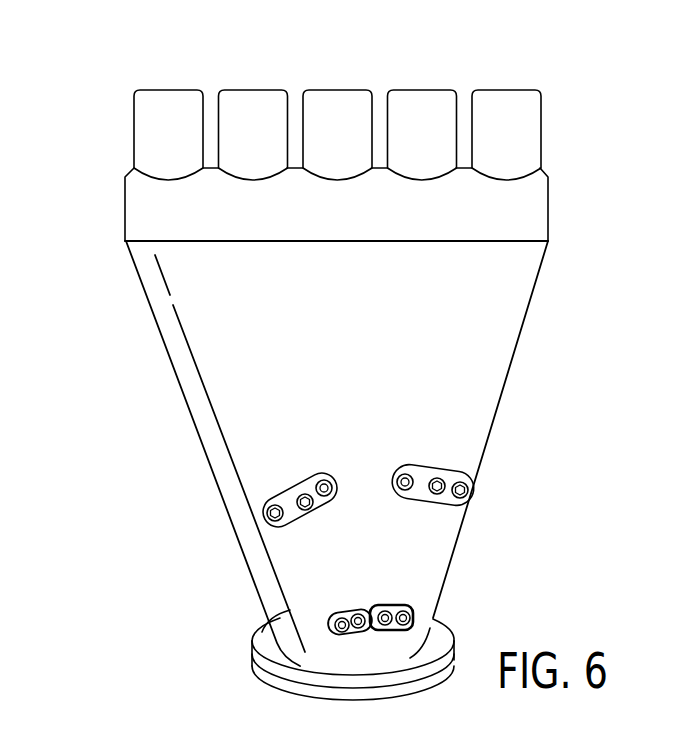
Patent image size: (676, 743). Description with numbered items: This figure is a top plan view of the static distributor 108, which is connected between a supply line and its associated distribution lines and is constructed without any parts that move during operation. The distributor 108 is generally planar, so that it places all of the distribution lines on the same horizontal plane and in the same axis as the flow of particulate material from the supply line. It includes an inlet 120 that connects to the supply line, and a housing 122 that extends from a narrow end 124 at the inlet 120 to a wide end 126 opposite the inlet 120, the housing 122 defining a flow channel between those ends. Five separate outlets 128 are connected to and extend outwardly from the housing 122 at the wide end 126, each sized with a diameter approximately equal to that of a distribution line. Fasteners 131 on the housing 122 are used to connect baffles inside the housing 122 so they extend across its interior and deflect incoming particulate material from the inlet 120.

The static distributor 108 is at (220, 444).
The inlet 120 is at (273, 658).
The housing 122 is at (267, 387).
The narrow end 124 is at (290, 642).
The wide end 126 is at (145, 210).
The outlets 128 is at (172, 102).
The fasteners 131 is at (300, 502).